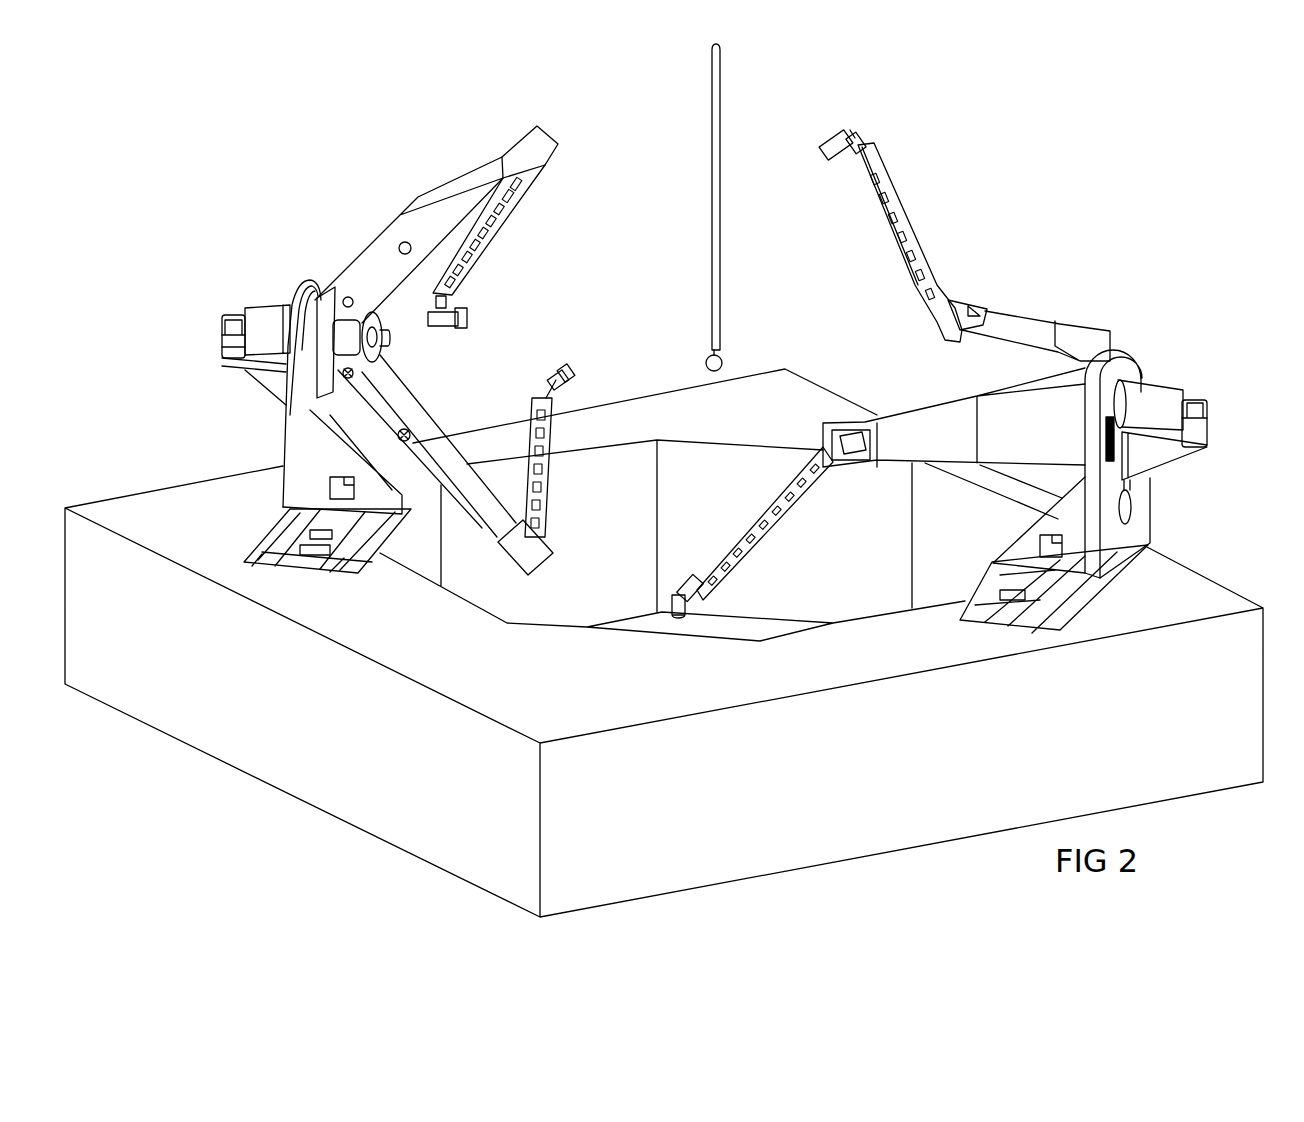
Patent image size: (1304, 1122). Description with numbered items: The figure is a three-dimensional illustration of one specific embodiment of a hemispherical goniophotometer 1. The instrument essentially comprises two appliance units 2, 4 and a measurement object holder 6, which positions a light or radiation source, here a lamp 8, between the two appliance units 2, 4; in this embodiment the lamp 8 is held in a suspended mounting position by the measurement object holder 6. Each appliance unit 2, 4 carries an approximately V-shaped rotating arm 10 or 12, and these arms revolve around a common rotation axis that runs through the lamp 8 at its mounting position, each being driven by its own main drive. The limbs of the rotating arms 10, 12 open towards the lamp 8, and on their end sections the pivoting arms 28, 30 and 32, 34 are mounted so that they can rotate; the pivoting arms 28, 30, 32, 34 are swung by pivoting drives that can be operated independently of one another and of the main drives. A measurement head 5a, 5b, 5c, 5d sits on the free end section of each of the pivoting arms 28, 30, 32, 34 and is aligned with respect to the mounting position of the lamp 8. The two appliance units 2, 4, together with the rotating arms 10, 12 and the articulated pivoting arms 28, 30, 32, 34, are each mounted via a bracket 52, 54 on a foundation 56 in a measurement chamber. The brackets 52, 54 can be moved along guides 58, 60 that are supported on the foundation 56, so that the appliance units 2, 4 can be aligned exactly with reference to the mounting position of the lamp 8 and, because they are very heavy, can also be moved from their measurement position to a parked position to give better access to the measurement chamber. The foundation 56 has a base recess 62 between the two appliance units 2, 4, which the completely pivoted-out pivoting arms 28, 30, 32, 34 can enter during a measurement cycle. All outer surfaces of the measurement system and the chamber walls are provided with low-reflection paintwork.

The hemispherical goniophotometer 1 is at (1014, 163).
The appliance unit 2 is at (300, 287).
The appliance unit 4 is at (1138, 358).
The measurement object holder 6 is at (715, 143).
The lamp 8 is at (723, 357).
The rotating arm 10 is at (380, 238).
The rotating arm 12 is at (1087, 325).
The pivoting arm 28 is at (526, 465).
The pivoting arm 30 is at (505, 230).
The pivoting arm 32 is at (773, 523).
The pivoting arm 34 is at (908, 223).
The measurement head 5a is at (578, 372).
The measurement head 5b is at (467, 322).
The measurement head 5c is at (682, 583).
The measurement head 5d is at (833, 158).
The bracket 52 is at (283, 447).
The bracket 54 is at (1150, 502).
The foundation 56 is at (600, 696).
The guide 58 is at (1062, 635).
The guide 60 is at (351, 569).
The base recess 62 is at (720, 624).